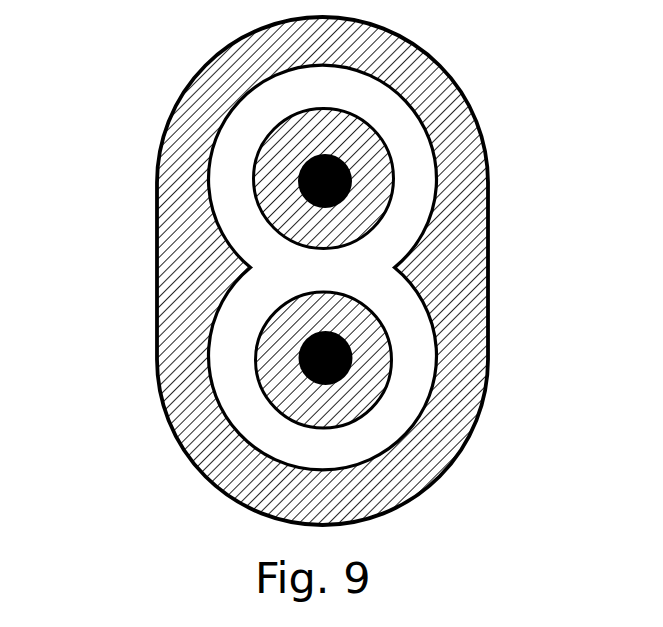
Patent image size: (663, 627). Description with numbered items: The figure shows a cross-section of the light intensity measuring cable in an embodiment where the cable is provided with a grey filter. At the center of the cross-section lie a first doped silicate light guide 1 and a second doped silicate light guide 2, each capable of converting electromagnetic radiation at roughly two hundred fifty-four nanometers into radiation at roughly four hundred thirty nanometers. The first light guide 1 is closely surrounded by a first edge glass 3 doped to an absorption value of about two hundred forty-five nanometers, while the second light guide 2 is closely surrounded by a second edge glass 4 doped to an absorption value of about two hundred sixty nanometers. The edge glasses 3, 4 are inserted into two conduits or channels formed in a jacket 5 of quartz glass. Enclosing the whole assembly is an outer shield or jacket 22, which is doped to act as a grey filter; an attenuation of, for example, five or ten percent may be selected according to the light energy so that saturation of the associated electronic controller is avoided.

The first doped silicate light guide 1 is at (350, 160).
The second doped silicate light guide 2 is at (347, 342).
The first edge glass 3 is at (377, 192).
The second edge glass 4 is at (366, 388).
The jacket 5 is at (232, 403).
The outer shield or jacket 22 is at (158, 302).